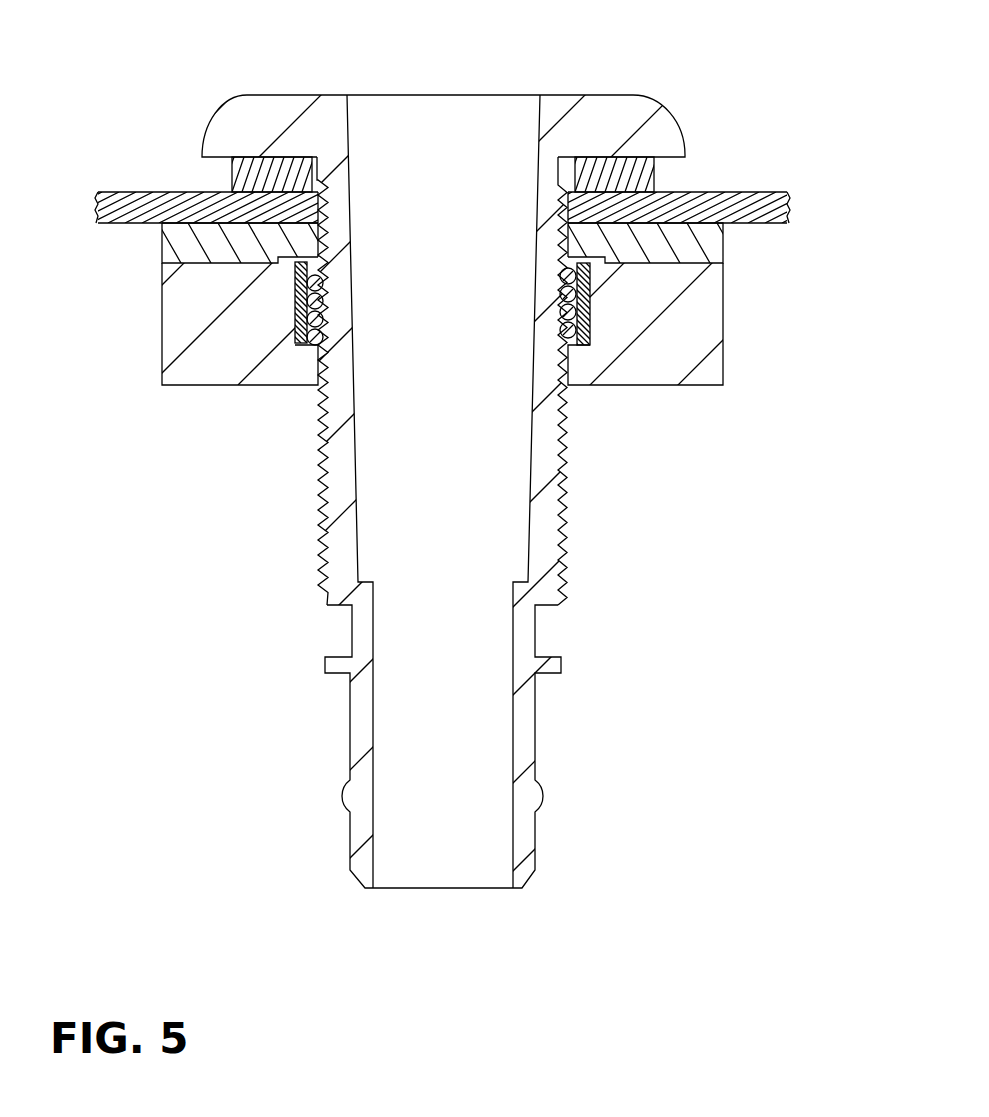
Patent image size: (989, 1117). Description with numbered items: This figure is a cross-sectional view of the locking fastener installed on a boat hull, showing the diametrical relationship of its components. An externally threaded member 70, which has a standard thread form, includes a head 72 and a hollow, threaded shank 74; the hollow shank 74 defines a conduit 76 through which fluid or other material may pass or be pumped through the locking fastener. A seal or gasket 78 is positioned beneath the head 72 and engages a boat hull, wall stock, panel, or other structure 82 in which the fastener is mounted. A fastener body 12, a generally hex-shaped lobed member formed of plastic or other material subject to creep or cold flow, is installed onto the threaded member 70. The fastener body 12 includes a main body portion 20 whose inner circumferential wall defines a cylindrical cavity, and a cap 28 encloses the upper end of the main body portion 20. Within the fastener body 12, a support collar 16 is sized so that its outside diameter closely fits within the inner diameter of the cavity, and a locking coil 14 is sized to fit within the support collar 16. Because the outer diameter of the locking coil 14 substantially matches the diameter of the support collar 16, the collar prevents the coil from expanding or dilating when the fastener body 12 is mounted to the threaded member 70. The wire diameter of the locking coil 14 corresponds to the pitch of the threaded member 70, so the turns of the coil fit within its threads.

The fastener body 12 is at (480, 243).
The locking coil 14 is at (303, 346).
The support collar 16 is at (291, 310).
The main body portion 20 is at (162, 323).
The cap 28 is at (162, 245).
The externally threaded member 70 is at (494, 558).
The head 72 is at (563, 95).
The threaded shank 74 is at (563, 510).
The conduit 76 is at (436, 843).
The gasket 78 is at (655, 182).
The structure 82 is at (755, 192).